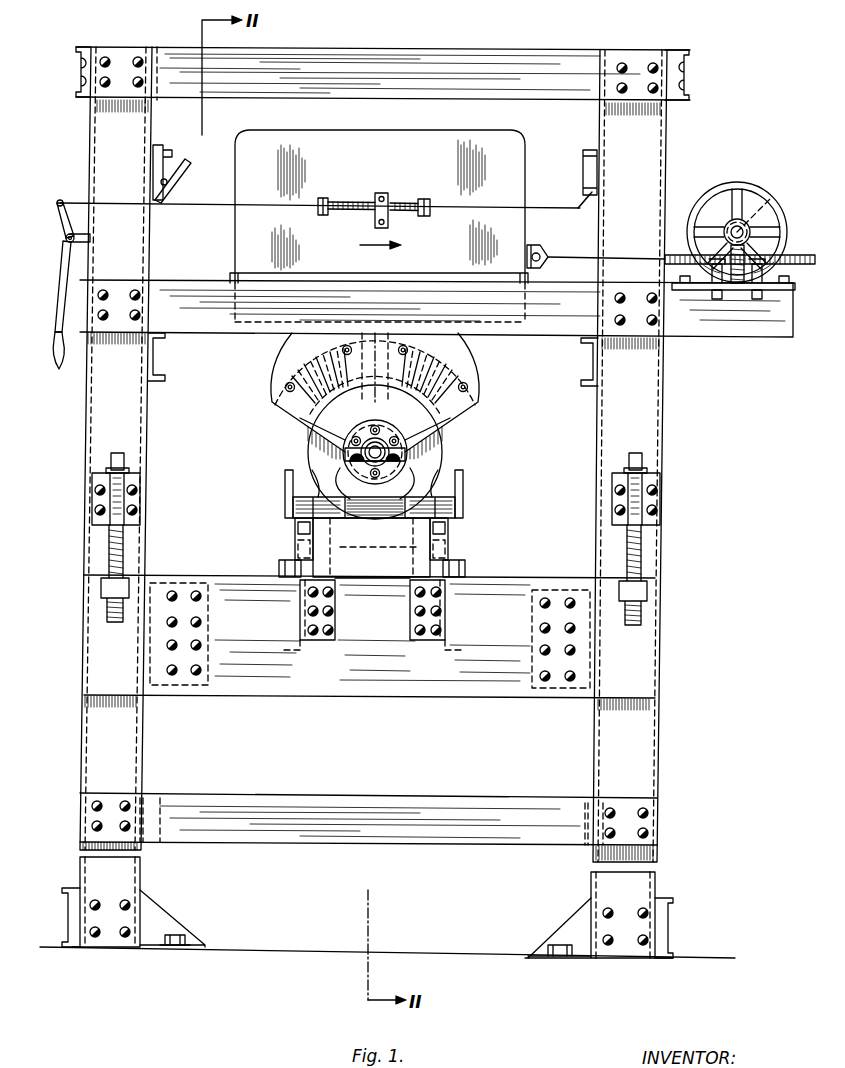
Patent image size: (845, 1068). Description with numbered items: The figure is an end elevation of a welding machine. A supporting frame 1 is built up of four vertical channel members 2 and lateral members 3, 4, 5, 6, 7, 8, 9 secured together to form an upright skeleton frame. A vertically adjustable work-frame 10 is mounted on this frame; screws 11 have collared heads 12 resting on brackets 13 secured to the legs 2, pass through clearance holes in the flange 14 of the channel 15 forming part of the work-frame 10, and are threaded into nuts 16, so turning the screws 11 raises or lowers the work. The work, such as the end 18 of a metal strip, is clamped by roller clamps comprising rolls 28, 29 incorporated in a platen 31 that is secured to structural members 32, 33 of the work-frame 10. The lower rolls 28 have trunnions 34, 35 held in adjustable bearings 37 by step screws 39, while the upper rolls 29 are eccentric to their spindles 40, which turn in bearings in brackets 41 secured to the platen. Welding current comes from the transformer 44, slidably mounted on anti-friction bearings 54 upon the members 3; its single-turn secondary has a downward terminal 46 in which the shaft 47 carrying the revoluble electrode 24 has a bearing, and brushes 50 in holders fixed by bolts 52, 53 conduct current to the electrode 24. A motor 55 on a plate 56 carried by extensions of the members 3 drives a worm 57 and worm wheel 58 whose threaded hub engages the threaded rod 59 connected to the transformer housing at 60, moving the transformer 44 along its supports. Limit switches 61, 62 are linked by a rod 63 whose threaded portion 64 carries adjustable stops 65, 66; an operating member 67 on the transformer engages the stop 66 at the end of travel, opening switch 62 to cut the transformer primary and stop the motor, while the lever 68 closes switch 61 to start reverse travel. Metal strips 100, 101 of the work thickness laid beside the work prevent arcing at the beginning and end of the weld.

The supporting frame 1 is at (660, 752).
The vertical channel member 2 is at (90, 403).
The lateral frame member 3 is at (181, 292).
The lateral frame member 4 is at (505, 64).
The lateral frame member 5 is at (168, 366).
The lateral frame member 6 is at (82, 47).
The lateral frame member 7 is at (68, 888).
The lateral frame member 8 is at (340, 800).
The lateral frame member 9 is at (155, 798).
The work-frame 10 is at (386, 698).
The screw 11 is at (110, 500).
The collared head 12 is at (110, 458).
The bracket 13 is at (95, 490).
The flange 14 is at (108, 565).
The channel 15 is at (238, 600).
The nut 16 is at (100, 590).
The end of metal strip 18 is at (395, 463).
The electrode 24 is at (244, 460).
The lower roll 28 is at (372, 553).
The eccentric roll 29 is at (348, 455).
The work frame platen 31 is at (372, 590).
The structural member 32 is at (296, 648).
The structural member 33 is at (448, 650).
The trunnion 34 is at (298, 528).
The trunnion 35 is at (450, 530).
The adjustable bearing 37 is at (300, 548).
The step screw 39 is at (304, 600).
The bearing spindle 40 is at (300, 507).
The bracket 41 is at (286, 488).
The welding transformer 44 is at (424, 150).
The secondary terminal 46 is at (470, 346).
The shaft 47 is at (377, 445).
The brushes 50 is at (330, 431).
The bolt 52 is at (340, 350).
The bolt 53 is at (284, 388).
The anti-friction bearing 54 is at (438, 279).
The motor 55 is at (742, 186).
The plate 56 is at (790, 292).
The worm 57 is at (752, 215).
The worm wheel 58 is at (770, 254).
The threaded rod 59 is at (726, 258).
The connection to transformer housing 60 is at (546, 252).
The limit switch 61 is at (162, 150).
The limit switch 62 is at (585, 152).
The rod 63 is at (216, 208).
The threaded portion 64 is at (355, 203).
The adjustable stop 65 is at (321, 216).
The adjustable stop 66 is at (424, 216).
The operating member 67 is at (390, 199).
The lever 68 is at (64, 270).
The metal strip 100 is at (332, 470).
The metal strip 101 is at (418, 470).